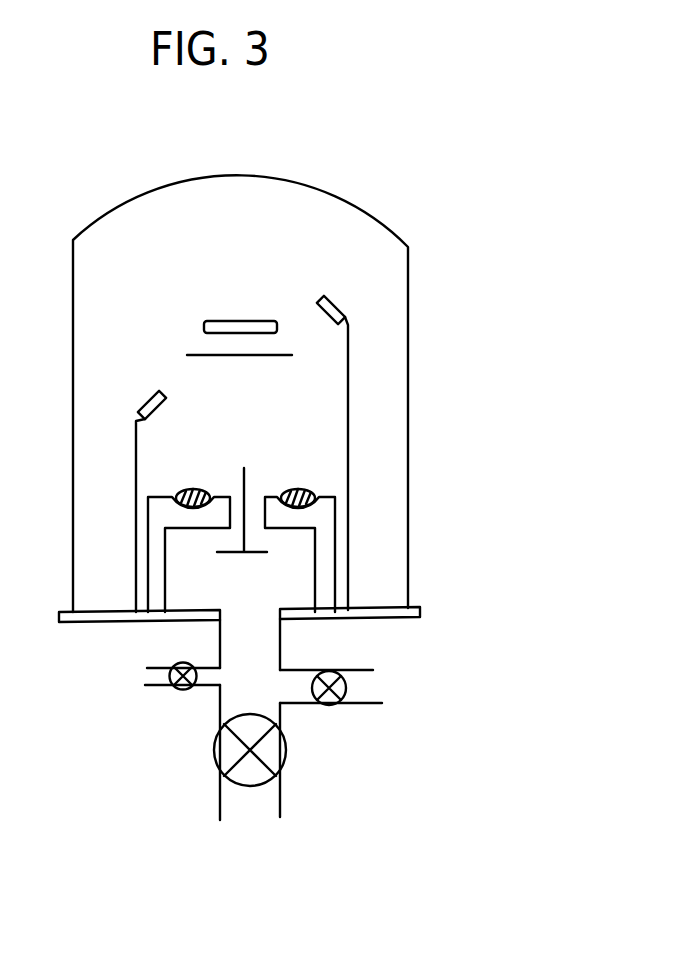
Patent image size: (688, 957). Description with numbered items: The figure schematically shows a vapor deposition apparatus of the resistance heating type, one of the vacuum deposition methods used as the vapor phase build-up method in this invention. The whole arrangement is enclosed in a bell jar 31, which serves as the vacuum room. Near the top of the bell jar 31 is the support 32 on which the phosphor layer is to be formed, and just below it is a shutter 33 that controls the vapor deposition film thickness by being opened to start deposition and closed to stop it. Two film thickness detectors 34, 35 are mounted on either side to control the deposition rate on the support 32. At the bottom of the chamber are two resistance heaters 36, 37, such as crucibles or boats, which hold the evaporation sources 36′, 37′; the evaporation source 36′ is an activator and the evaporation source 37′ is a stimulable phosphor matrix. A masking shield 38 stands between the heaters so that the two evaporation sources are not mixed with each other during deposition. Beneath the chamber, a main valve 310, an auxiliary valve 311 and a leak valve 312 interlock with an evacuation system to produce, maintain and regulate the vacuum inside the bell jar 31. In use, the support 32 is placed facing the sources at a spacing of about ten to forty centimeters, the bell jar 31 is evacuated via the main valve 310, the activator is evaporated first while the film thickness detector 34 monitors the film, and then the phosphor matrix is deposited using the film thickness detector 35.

The bell jar 31 is at (410, 247).
The support 32 is at (242, 318).
The shutter 33 is at (272, 355).
The film thickness detector 34 is at (152, 395).
The film thickness detector 35 is at (330, 298).
The resistance heater 36 is at (227, 489).
The evaporation source (activator) 36′ is at (190, 489).
The resistance heater 37 is at (330, 488).
The evaporation source (stimulable phosphor matrix) 37′ is at (298, 488).
The masking shield 38 is at (240, 537).
The main valve 310 is at (216, 760).
The auxiliary valve 311 is at (330, 705).
The leak valve 312 is at (172, 690).